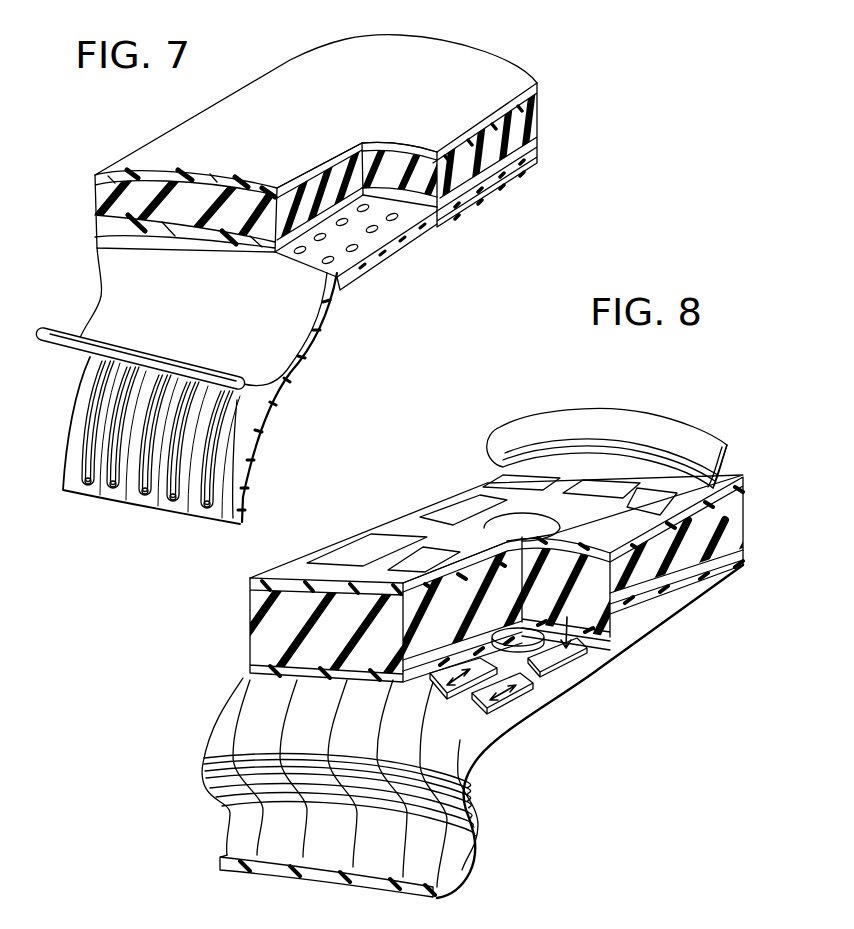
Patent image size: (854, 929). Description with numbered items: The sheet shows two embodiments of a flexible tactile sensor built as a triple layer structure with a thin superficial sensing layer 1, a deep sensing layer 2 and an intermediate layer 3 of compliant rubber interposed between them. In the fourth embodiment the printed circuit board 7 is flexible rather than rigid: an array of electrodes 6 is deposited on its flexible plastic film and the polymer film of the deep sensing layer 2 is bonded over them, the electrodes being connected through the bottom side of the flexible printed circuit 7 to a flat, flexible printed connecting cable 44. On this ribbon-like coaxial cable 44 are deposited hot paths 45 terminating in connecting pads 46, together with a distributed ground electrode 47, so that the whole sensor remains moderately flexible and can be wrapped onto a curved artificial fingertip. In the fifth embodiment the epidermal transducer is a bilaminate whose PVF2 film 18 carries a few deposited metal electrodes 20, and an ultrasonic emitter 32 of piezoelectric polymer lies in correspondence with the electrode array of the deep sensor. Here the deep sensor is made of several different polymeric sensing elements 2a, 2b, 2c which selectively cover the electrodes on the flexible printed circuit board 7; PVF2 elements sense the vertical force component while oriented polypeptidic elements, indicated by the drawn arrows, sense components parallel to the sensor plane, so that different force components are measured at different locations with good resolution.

In FIG. 7, the superficial sensing layer 1 is at (480, 80).
In FIG. 7, the deep sensing layer 2 is at (534, 145).
In FIG. 7, the intermediate layer 3 is at (118, 200).
In FIG. 8, the intermediate layer 3 is at (733, 527).
In FIG. 7, the electrodes 6 is at (398, 218).
In FIG. 7, the flexible printed circuit board 7 is at (405, 235).
In FIG. 8, the flexible printed circuit board 7 is at (478, 820).
In FIG. 7, the flat flexible printed connecting cable 44 is at (278, 388).
In FIG. 7, the hot paths 45 is at (193, 418).
In FIG. 7, the connecting pads 46 is at (113, 497).
In FIG. 7, the distributed ground electrode 47 is at (237, 494).
In FIG. 8, the PVF2 film 18 is at (605, 432).
In FIG. 8, the metal electrodes 20 is at (600, 487).
In FIG. 8, the ultrasonic emitter 32 is at (575, 672).
In FIG. 8, the polymeric sensing element 2a is at (445, 688).
In FIG. 8, the polymeric sensing element 2b is at (508, 710).
In FIG. 8, the polymeric sensing element 2c is at (550, 672).